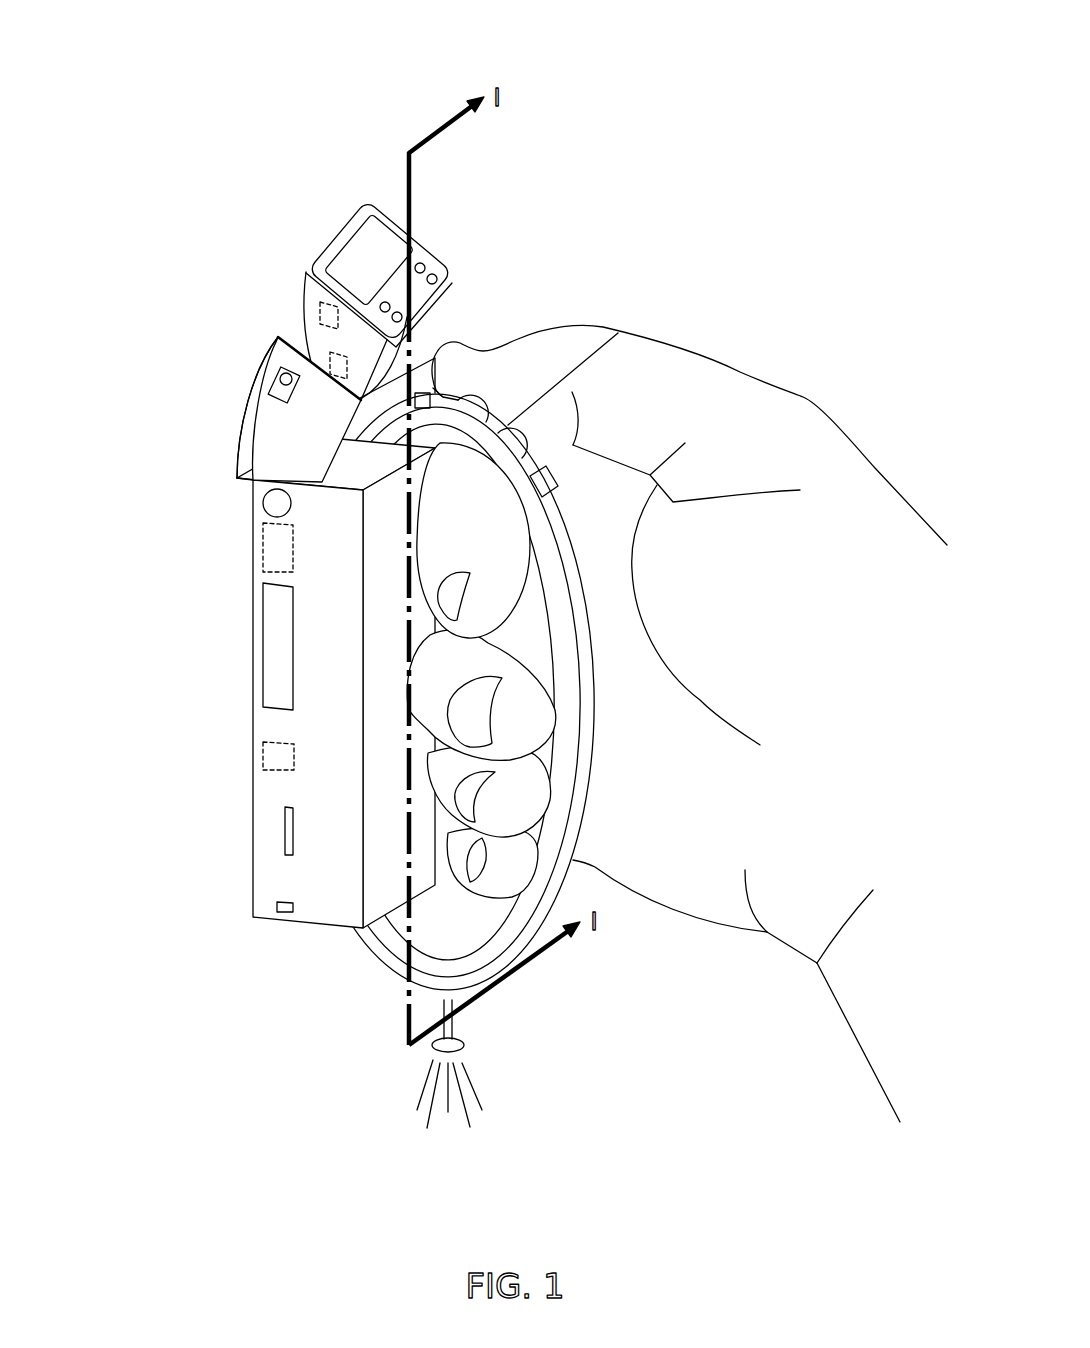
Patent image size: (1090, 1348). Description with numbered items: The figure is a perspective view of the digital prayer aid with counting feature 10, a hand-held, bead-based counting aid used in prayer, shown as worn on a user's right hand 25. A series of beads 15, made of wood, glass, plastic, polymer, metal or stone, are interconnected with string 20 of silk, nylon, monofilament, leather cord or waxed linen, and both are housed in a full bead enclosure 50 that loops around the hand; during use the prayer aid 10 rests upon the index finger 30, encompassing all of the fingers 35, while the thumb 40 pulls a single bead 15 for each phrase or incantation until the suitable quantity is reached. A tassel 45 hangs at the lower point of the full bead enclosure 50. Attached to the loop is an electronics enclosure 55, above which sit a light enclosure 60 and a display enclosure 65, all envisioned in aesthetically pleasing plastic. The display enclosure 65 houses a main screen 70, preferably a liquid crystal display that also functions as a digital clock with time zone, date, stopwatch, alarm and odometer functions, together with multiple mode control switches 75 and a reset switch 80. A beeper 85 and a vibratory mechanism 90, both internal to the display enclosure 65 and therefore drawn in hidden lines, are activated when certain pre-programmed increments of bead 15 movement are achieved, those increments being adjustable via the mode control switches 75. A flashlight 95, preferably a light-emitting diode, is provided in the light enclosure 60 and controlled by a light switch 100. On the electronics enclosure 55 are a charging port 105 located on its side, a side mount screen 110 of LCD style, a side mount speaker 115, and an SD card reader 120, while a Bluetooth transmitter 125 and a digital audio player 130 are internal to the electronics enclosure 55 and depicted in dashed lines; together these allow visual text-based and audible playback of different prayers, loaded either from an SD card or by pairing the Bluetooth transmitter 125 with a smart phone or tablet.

The digital prayer aid with counting feature 10 is at (130, 176).
The beads 15 is at (598, 437).
The string 20 is at (488, 392).
The right hand 25 is at (772, 590).
The index finger 30 is at (428, 525).
The finger 35 is at (430, 667).
The thumb 40 is at (470, 350).
The tassel 45 is at (463, 1067).
The full bead enclosure 50 is at (552, 578).
The electronics enclosure 55 is at (258, 673).
The light enclosure 60 is at (310, 437).
The display enclosure 65 is at (320, 250).
The main screen 70 is at (365, 240).
The mode control switch 75 is at (383, 302).
The reset switch 80 is at (393, 315).
The beeper 85 is at (318, 311).
The vibratory mechanism 90 is at (328, 360).
The flashlight 95 is at (240, 405).
The light switch 100 is at (272, 378).
The charging port 105 is at (277, 905).
The side mount screen 110 is at (307, 592).
The side mount speaker 115 is at (264, 506).
The SD card reader 120 is at (288, 827).
The Bluetooth transmitter 125 is at (282, 754).
The digital audio player 130 is at (284, 538).